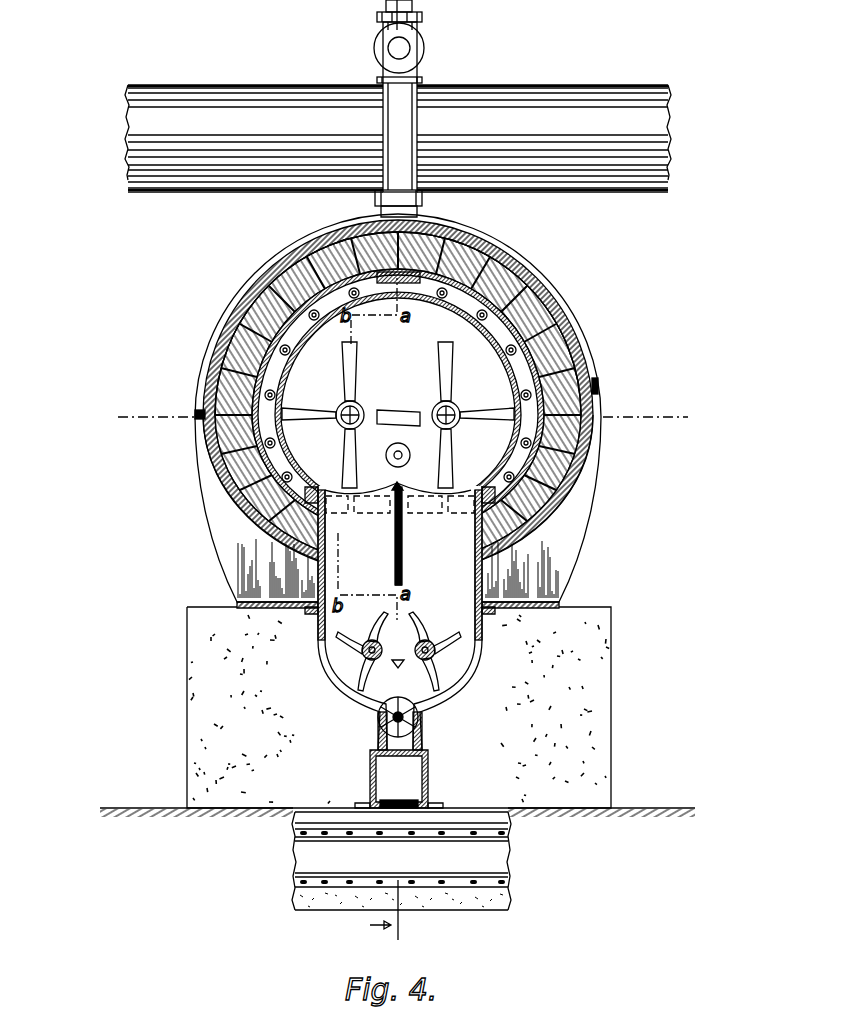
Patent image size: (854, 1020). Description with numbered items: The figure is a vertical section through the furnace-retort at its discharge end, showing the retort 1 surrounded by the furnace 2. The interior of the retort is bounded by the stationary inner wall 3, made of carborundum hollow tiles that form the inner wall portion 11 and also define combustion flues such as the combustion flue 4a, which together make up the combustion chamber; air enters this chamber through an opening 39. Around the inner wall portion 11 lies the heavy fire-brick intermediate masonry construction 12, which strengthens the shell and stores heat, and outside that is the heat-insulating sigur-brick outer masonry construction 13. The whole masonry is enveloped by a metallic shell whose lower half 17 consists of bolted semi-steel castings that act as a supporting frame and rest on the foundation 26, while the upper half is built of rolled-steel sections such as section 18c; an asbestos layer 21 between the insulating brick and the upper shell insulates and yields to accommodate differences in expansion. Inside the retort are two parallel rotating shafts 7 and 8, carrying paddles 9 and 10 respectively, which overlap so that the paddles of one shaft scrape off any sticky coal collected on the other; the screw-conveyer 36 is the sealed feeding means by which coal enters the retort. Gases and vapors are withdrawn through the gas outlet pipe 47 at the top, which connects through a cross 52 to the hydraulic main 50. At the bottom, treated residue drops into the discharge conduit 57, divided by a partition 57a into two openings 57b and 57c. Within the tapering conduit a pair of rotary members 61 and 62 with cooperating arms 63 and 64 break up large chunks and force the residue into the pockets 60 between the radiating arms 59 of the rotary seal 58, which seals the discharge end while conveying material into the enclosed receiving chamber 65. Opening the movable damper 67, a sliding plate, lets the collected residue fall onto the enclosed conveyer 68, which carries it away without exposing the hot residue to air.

The retort 1 is at (387, 922).
The furnace 2 is at (399, 418).
The inner wall 3 is at (443, 300).
The combustion flue 4a is at (478, 318).
The rotating shaft 7 is at (358, 405).
The rotating shaft 8 is at (458, 407).
The paddles 9 is at (323, 410).
The paddles 10 is at (452, 456).
The inner wall portion 11 is at (498, 340).
The intermediate masonry construction 12 is at (500, 252).
The outer masonry construction 13 is at (217, 340).
The lower half of metallic shell 17 is at (588, 538).
The upper shell section 18c is at (563, 318).
The asbestos layer 21 is at (470, 305).
The foundation 26 is at (609, 730).
The screw-conveyer 36 is at (408, 455).
The opening 39 is at (594, 376).
The gas outlet pipe 47 is at (424, 215).
The hydraulic main 50 is at (128, 166).
The cross 52 is at (425, 49).
The discharge conduit 57 is at (400, 618).
The partition 57a is at (404, 580).
The opening 57b is at (400, 528).
The opening 57c is at (425, 536).
The rotary seal 58 is at (424, 725).
The radiating arms 59 is at (378, 728).
The pocket 60 is at (426, 707).
The rotary member 61 is at (362, 658).
The rotary member 62 is at (430, 657).
The arms 63 is at (347, 645).
The arms 64 is at (465, 633).
The receiving chamber 65 is at (414, 772).
The movable damper 67 is at (392, 800).
The conveyer 68 is at (447, 840).